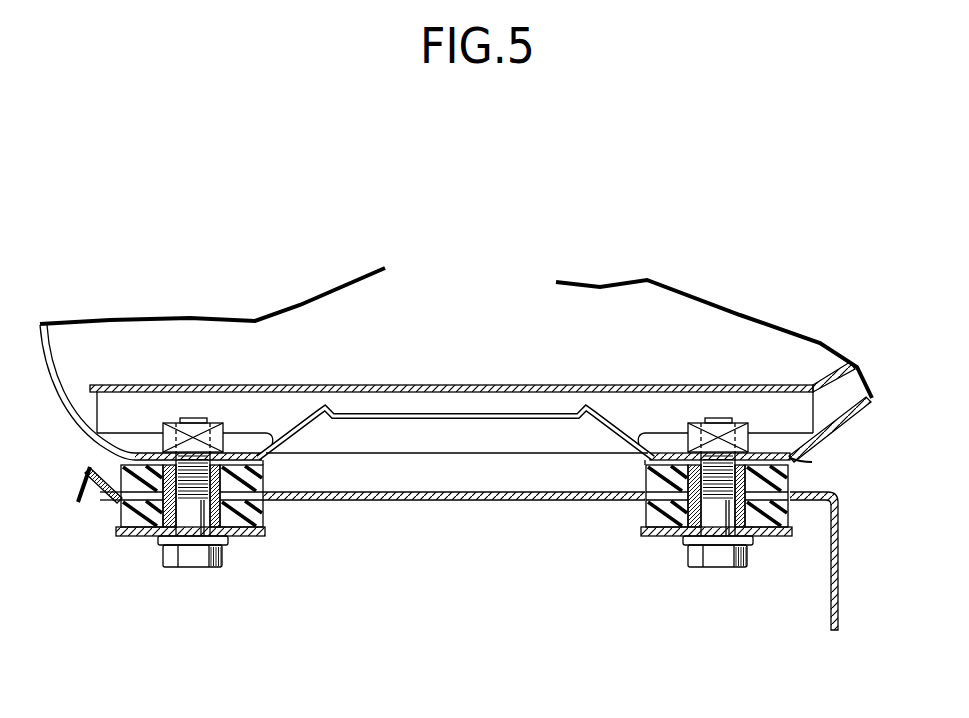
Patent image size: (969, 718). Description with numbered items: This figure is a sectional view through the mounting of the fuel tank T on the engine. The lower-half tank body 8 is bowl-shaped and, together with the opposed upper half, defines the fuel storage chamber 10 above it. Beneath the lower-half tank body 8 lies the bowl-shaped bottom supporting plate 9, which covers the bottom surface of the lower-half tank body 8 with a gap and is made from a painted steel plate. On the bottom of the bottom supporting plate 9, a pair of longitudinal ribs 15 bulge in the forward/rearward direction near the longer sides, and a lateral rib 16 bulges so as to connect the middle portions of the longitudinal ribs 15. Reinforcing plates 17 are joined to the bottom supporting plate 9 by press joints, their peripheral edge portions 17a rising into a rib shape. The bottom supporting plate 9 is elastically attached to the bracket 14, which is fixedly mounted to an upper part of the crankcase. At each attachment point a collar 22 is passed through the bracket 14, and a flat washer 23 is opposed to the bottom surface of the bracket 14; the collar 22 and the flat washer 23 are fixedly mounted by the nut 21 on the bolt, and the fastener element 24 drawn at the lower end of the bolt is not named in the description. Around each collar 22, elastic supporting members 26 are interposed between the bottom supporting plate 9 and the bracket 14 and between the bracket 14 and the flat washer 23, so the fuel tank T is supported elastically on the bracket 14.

The fuel tank T is at (592, 282).
The lower-half tank body 8 is at (403, 387).
The bottom supporting plate 9 is at (853, 403).
The fuel storage chamber 10 is at (463, 330).
The bracket 14 is at (563, 500).
The longitudinal rib 15 is at (267, 463).
The lateral rib 16 is at (463, 455).
The reinforcing plate 17 is at (143, 460).
The peripheral edge portion 17a is at (100, 433).
The nut 21 is at (193, 423).
The collar 22 is at (153, 528).
The flat washer 23 is at (248, 535).
The nut 24 is at (195, 567).
The elastic supporting member 26 is at (118, 487).